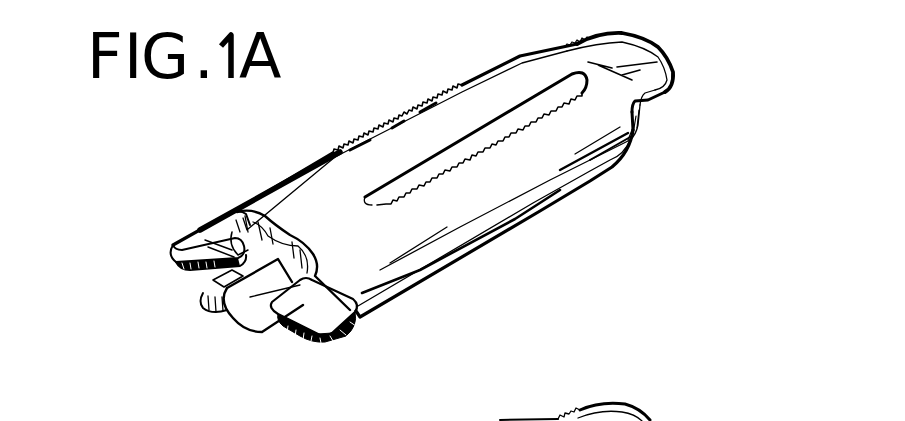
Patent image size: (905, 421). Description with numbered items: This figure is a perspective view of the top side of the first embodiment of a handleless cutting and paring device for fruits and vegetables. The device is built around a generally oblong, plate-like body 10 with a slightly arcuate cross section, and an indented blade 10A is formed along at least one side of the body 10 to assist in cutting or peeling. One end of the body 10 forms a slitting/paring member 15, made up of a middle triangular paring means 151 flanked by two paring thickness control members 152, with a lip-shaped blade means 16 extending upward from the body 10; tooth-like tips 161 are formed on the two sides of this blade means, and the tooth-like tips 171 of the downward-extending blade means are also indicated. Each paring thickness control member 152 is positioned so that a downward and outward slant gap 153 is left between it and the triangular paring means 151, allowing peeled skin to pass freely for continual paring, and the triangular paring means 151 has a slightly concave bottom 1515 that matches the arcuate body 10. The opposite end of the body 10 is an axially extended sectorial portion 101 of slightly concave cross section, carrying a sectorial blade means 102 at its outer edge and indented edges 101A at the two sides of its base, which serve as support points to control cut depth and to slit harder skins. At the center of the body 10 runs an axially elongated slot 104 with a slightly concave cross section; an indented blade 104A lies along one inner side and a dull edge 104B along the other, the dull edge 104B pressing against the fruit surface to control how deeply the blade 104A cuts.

The body 10 is at (531, 236).
The indented blade 10A is at (347, 137).
The sectorial portion 101 is at (656, 34).
The indented edge 101A is at (645, 124).
The sectorial blade means 102 is at (668, 72).
The axially elongated slot 104 is at (378, 193).
The indented blade 104A is at (453, 147).
The dull edge 104B is at (453, 135).
The slitting/paring member 15 is at (68, 246).
The triangular paring means 151 is at (203, 314).
The concave bottom 1515 is at (224, 320).
The paring thickness control member 152 is at (174, 245).
The slant gap 153 is at (212, 281).
The lip-shaped blade means 16 is at (273, 222).
The tooth-like tips 161 is at (229, 208).
The tooth-like tips 171 is at (243, 262).